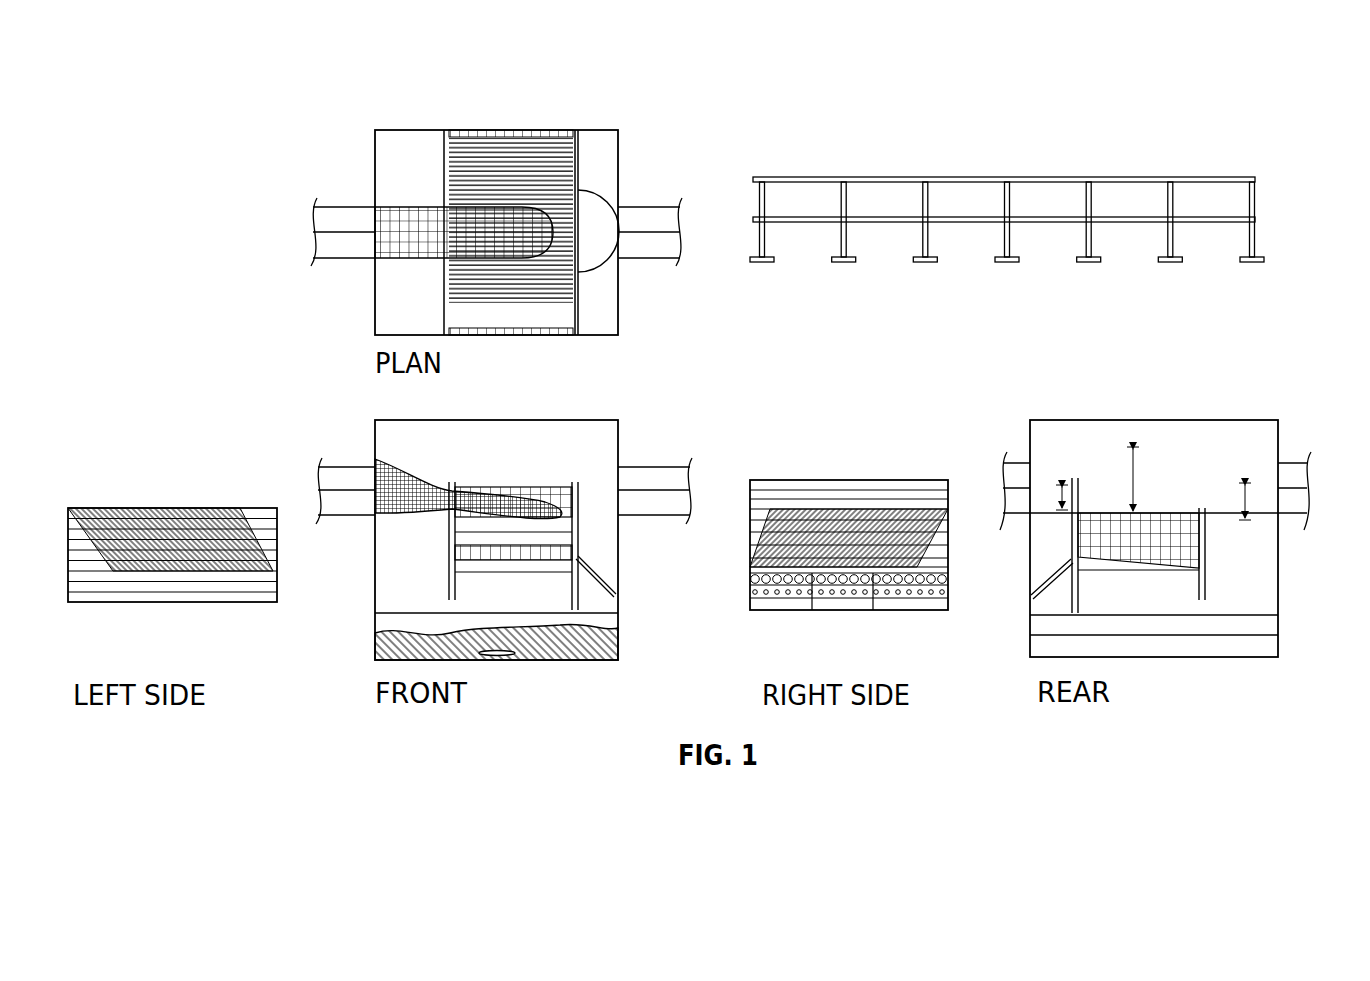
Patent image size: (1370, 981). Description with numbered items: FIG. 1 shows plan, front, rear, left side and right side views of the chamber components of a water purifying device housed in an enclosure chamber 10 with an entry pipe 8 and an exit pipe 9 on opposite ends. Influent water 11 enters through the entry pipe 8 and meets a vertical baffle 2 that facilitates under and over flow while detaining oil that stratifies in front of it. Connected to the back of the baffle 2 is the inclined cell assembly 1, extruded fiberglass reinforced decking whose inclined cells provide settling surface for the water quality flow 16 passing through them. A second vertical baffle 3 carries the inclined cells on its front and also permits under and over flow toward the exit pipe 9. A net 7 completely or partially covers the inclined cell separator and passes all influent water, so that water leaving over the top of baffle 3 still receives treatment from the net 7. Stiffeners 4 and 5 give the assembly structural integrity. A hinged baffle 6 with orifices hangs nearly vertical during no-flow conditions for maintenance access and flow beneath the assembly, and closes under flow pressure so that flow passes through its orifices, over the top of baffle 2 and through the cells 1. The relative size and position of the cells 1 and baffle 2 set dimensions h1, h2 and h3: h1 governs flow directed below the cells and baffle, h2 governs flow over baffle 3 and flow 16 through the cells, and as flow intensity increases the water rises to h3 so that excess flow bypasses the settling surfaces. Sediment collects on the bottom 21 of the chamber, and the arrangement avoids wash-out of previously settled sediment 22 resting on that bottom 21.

The inclined cell assembly 1 is at (963, 177).
The vertical baffle 2 is at (432, 285).
The vertical baffle 3 is at (578, 288).
The stiffener 4 is at (487, 333).
The stiffener 5 is at (530, 130).
The hinged baffle 6 is at (580, 608).
The net 7 is at (400, 205).
The entry pipe 8 is at (327, 207).
The exit pipe 9 is at (640, 207).
The enclosure chamber 10 is at (603, 130).
The influent water 11 is at (297, 229).
The flow through inclined cells 16 is at (578, 560).
The bottom 21 is at (497, 660).
The settled sediment 22 is at (565, 650).
The dimension h1 is at (1242, 500).
The dimension h2 is at (1058, 490).
The dimension h3 is at (1138, 480).